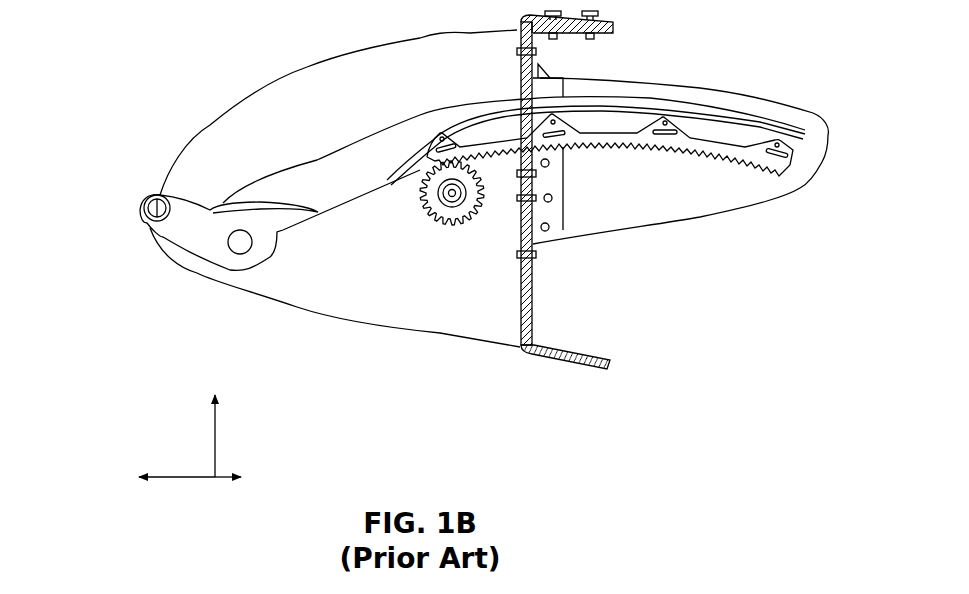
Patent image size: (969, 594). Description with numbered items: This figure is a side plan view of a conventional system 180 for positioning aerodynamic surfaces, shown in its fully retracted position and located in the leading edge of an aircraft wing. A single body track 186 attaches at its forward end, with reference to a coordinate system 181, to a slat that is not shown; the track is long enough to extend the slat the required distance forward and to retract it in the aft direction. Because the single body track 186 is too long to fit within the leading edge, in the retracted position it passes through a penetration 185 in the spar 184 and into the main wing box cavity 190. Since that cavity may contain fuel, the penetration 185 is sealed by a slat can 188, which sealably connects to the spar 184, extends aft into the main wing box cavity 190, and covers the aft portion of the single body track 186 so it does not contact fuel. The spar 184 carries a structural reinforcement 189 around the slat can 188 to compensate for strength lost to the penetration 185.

The conventional system 180 is at (181, 68).
The coordinate system 181 is at (184, 441).
The spar 184 is at (531, 282).
The penetration 185 is at (519, 92).
The single body track 186 is at (317, 163).
The slat can 188 is at (706, 213).
The structural reinforcement 189 is at (548, 80).
The main wing box cavity 190 is at (732, 339).